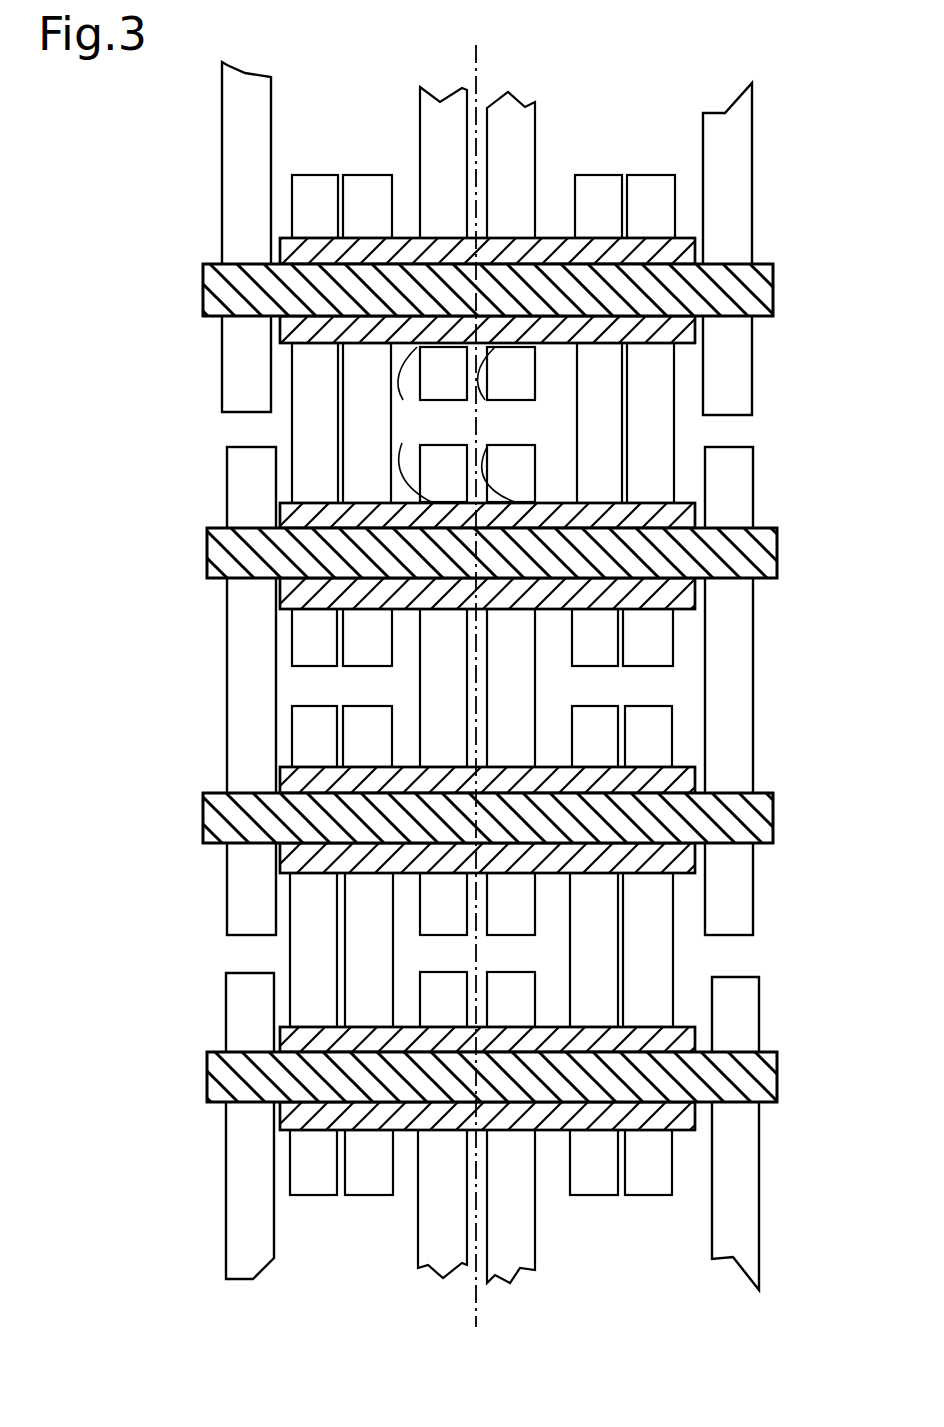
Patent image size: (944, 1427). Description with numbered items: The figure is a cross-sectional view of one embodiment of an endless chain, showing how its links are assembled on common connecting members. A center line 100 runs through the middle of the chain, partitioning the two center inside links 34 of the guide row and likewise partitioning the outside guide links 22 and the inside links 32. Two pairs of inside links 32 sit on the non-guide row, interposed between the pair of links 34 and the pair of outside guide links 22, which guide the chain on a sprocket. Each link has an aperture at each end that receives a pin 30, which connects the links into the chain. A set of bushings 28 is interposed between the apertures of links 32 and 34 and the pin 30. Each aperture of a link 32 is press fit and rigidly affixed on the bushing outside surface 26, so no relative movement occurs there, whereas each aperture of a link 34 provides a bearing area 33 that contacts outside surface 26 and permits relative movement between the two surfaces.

The center line 100 is at (487, 67).
The outside guide link 22 is at (232, 390).
The outside surface 26 is at (492, 684).
The bushing 28 is at (567, 345).
The pin 30 is at (753, 287).
The inside link 32 is at (301, 225).
The bearing area 33 is at (456, 425).
The inside link 34 is at (429, 386).